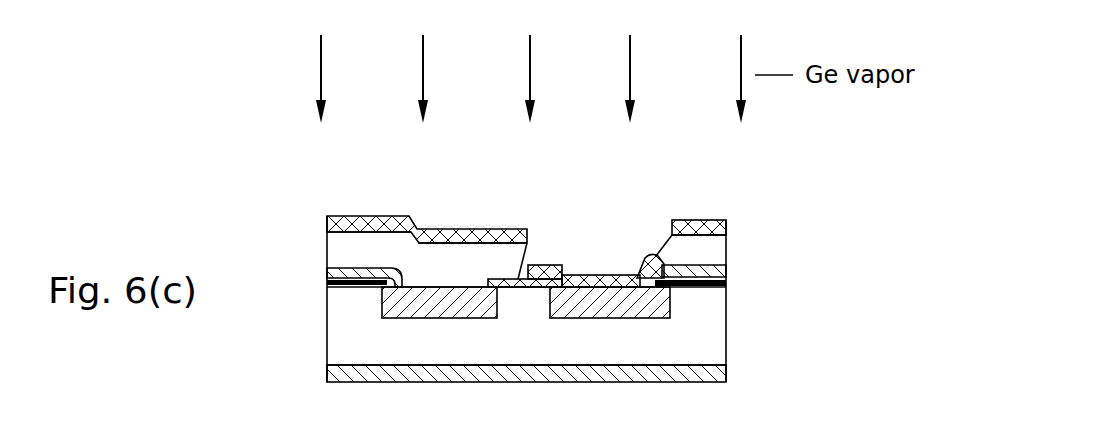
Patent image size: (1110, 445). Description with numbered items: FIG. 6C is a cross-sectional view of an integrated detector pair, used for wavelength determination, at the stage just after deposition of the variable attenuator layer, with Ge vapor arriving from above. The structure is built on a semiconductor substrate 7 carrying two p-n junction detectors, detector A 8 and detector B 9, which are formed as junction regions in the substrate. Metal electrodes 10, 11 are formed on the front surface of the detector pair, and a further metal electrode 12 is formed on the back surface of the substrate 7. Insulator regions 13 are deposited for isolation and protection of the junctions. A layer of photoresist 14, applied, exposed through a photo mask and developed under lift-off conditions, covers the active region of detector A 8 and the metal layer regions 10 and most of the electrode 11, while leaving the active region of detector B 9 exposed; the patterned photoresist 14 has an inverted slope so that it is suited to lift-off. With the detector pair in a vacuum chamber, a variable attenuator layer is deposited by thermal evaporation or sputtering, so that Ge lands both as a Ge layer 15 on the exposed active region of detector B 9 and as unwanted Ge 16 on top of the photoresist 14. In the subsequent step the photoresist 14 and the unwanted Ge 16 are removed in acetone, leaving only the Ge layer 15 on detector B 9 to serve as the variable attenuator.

The semiconductor substrate 7 is at (327, 343).
The detector A 8 is at (403, 300).
The detector B 9 is at (582, 293).
The metal electrode 10 is at (327, 268).
The metal electrode 11 is at (726, 272).
The metal electrode 12 is at (327, 375).
The insulator region 13 is at (726, 283).
The photoresist 14 is at (378, 252).
The variable attenuator layer 15 is at (600, 283).
The unwanted Ge 16 is at (402, 220).